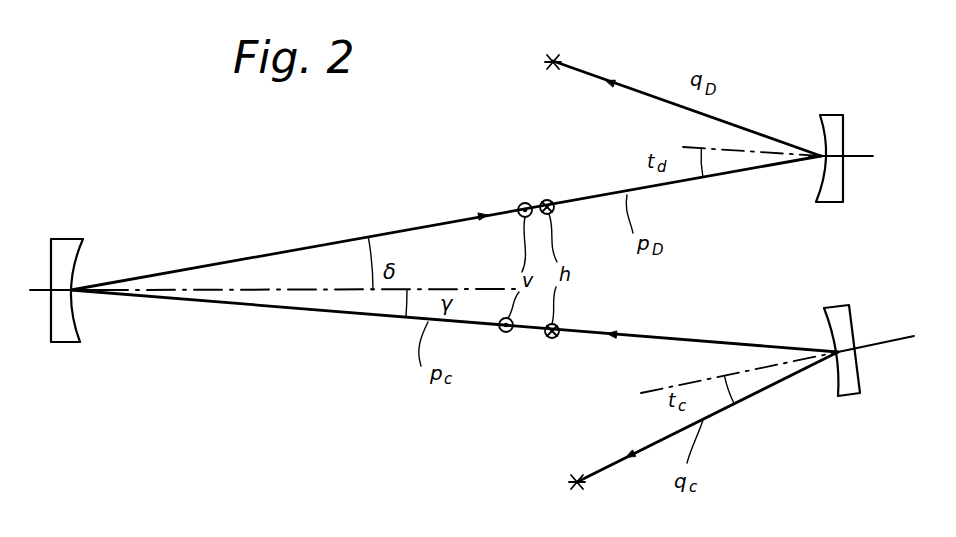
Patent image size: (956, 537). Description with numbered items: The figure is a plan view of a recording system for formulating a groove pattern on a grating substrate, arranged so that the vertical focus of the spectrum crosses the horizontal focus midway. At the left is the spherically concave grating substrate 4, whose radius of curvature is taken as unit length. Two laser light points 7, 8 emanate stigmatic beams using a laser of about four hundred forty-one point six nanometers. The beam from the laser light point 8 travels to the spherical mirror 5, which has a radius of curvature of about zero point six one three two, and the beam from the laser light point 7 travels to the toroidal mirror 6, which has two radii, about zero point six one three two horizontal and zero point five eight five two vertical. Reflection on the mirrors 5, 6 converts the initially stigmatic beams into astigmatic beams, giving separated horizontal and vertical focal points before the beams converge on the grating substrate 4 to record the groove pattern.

The spherically concave grating substrate 4 is at (72, 343).
The spherical mirror 5 is at (830, 114).
The toroidal mirror 6 is at (848, 397).
The laser light point 7 is at (564, 486).
The laser light point 8 is at (539, 68).